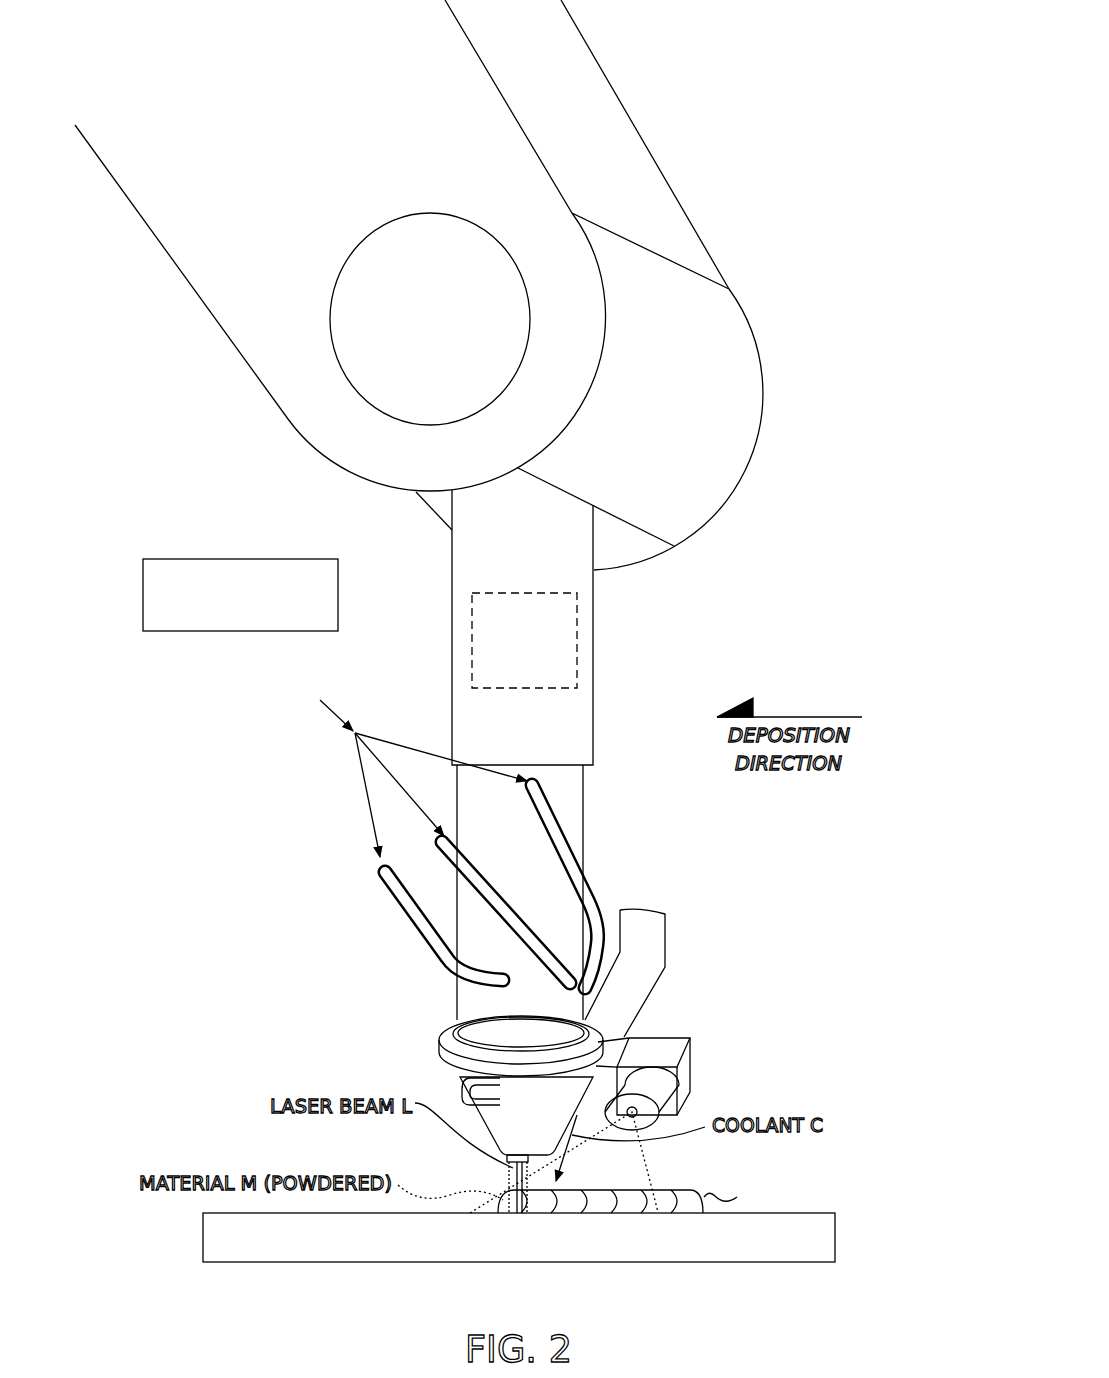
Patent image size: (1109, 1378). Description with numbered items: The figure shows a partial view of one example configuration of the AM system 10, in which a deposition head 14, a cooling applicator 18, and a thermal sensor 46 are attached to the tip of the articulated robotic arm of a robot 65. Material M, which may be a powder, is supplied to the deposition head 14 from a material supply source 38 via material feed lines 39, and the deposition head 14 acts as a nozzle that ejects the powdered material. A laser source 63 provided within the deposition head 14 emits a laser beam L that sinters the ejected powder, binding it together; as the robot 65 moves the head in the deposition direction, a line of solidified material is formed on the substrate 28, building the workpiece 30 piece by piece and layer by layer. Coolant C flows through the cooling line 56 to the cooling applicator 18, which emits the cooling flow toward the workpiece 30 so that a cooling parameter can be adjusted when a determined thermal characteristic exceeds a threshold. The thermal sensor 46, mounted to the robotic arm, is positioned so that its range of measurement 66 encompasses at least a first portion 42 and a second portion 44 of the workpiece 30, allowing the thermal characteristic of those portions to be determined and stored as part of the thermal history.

The AM system 10 is at (486, 285).
The robot 65 is at (760, 280).
The laser source 63 is at (535, 678).
The material supply source 38 is at (292, 672).
The material feed line 39 is at (327, 713).
The cooling line 56 is at (643, 898).
The cooling applicator 18 is at (640, 999).
The deposition head 14 is at (532, 1132).
The thermal sensor 46 is at (933, 1082).
The range of measurement 66 is at (653, 1166).
The workpiece 30 is at (589, 1178).
The first portion 42 is at (537, 1215).
The second portion 44 is at (562, 1203).
The substrate 28 is at (533, 1247).